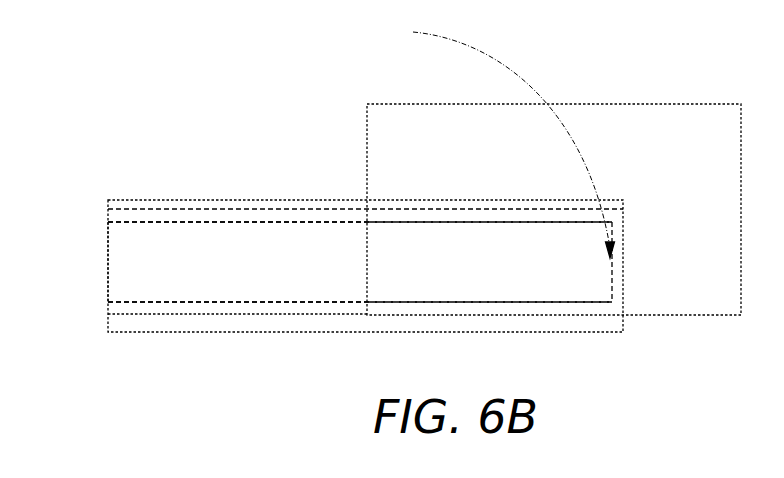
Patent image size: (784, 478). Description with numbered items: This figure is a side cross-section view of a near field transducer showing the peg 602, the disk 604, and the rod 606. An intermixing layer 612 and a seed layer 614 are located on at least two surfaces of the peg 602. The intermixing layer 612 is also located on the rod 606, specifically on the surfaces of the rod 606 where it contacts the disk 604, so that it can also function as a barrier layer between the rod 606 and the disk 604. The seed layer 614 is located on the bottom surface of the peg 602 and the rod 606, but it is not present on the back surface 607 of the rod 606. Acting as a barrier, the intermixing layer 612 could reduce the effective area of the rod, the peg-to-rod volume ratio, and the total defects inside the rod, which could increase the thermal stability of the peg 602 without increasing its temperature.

The peg 602 is at (196, 274).
The disk 604 is at (626, 159).
The rod 606 is at (513, 274).
The back surface 607 is at (491, 140).
The intermixing layer 612 is at (143, 218).
The seed layer 614 is at (213, 207).